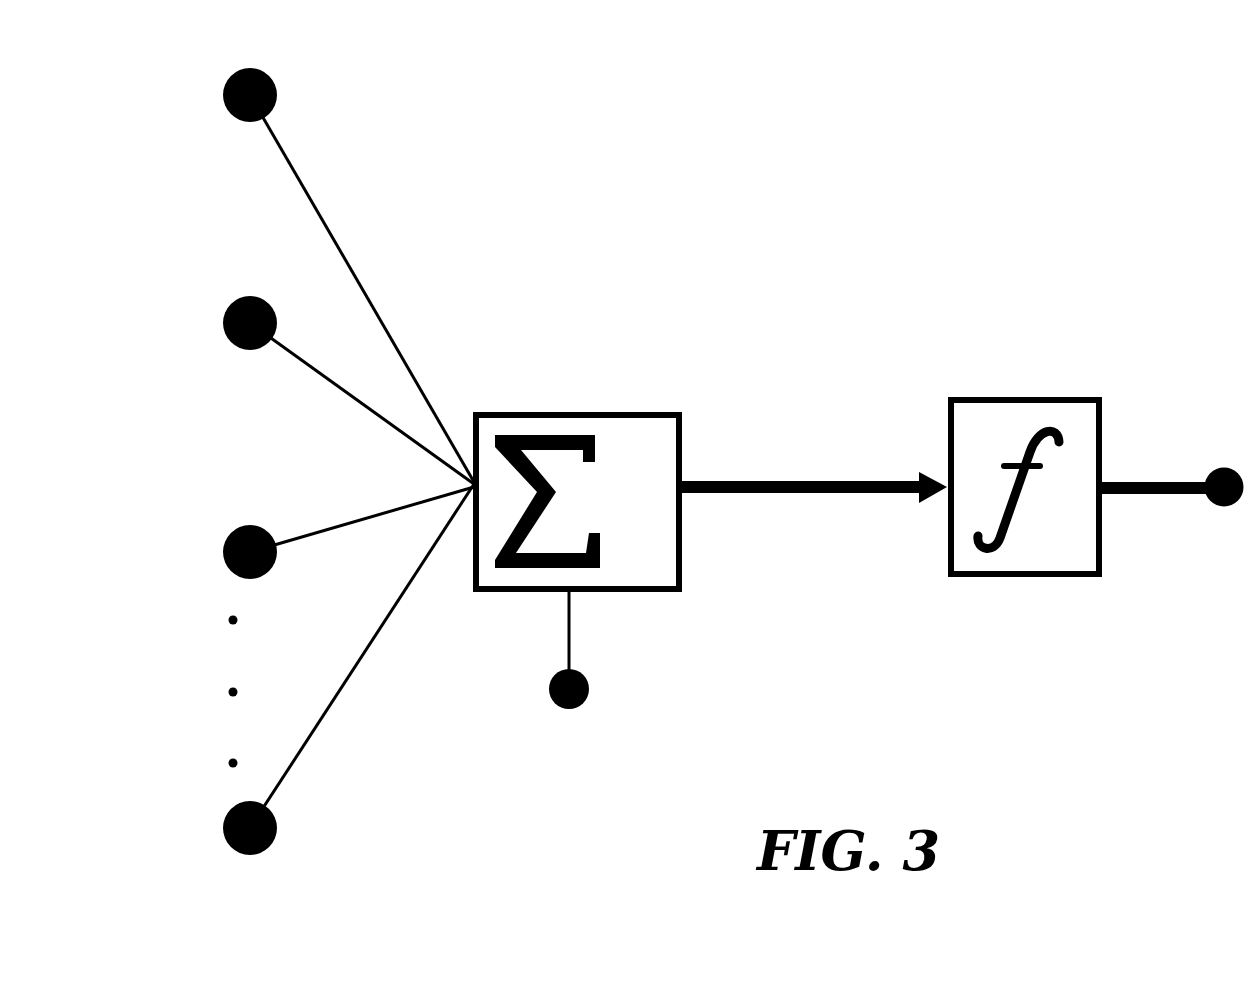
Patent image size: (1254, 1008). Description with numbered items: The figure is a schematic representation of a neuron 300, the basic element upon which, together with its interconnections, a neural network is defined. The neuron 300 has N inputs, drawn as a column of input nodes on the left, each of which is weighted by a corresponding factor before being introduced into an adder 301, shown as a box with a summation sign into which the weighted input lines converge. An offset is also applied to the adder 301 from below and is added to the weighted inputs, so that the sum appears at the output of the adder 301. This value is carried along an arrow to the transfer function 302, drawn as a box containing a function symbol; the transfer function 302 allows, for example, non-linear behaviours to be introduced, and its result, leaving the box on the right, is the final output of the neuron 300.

The neuron 300 is at (710, 482).
The adder 301 is at (637, 411).
The transfer function 302 is at (1010, 397).